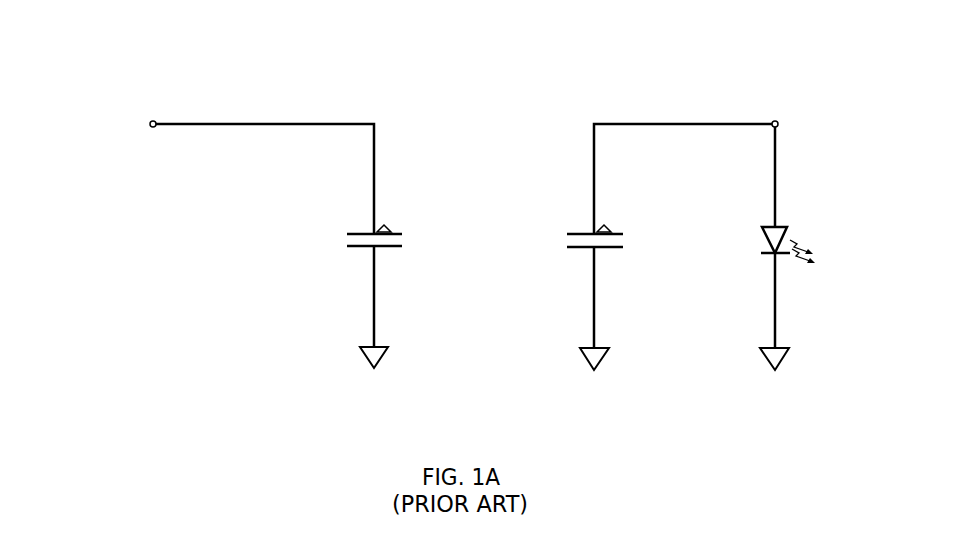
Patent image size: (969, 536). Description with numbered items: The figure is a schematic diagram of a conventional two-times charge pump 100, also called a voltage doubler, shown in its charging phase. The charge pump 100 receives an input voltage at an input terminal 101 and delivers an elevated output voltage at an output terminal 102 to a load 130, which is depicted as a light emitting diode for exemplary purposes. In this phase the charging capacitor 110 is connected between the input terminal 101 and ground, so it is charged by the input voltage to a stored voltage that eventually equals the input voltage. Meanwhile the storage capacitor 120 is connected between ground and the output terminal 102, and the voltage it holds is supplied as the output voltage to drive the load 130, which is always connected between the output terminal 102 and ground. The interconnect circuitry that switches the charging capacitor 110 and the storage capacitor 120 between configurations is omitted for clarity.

The charge pump 100 is at (78, 63).
The input terminal 101 is at (153, 120).
The output terminal 102 is at (775, 119).
The charging capacitor 110 is at (366, 296).
The storage capacitor 120 is at (588, 297).
The load 130 is at (760, 298).